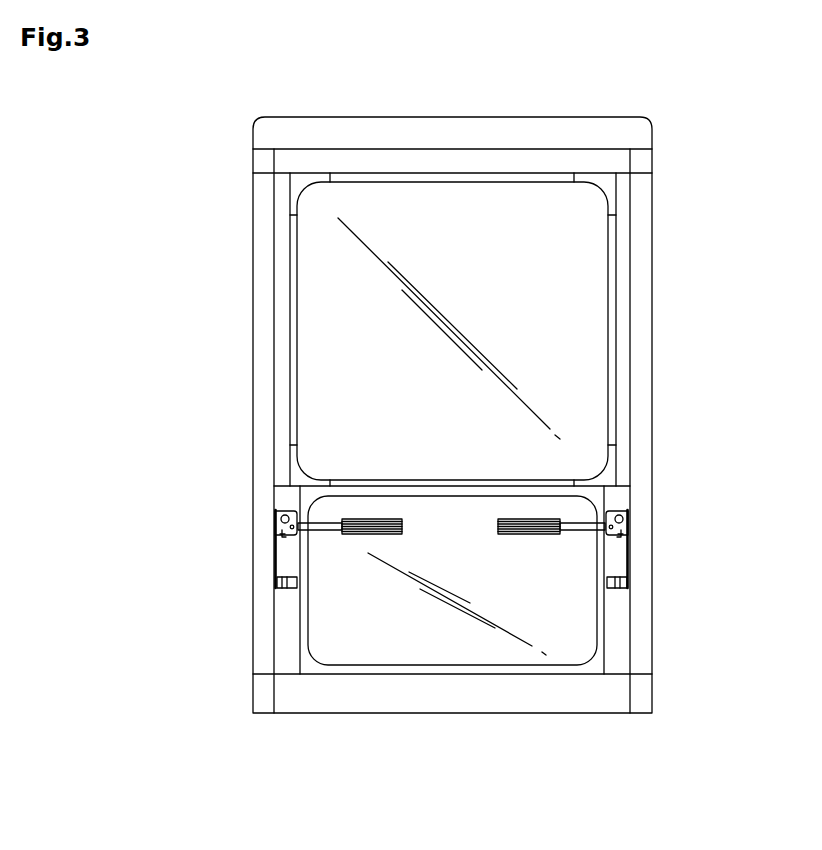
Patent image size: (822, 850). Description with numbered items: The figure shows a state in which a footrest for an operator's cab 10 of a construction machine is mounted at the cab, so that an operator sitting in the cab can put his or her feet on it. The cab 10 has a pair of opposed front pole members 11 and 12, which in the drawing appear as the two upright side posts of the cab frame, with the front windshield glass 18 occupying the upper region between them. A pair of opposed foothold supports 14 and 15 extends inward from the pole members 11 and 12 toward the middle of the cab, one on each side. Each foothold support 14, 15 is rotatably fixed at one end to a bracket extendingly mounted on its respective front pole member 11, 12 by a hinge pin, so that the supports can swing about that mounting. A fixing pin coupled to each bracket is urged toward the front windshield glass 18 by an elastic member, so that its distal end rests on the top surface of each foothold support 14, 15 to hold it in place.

The operator's cab 10 is at (660, 401).
The front pole member 11 is at (272, 552).
The front pole member 12 is at (640, 551).
The foothold support 14 is at (357, 543).
The foothold support 15 is at (545, 542).
The front windshield glass 18 is at (473, 287).